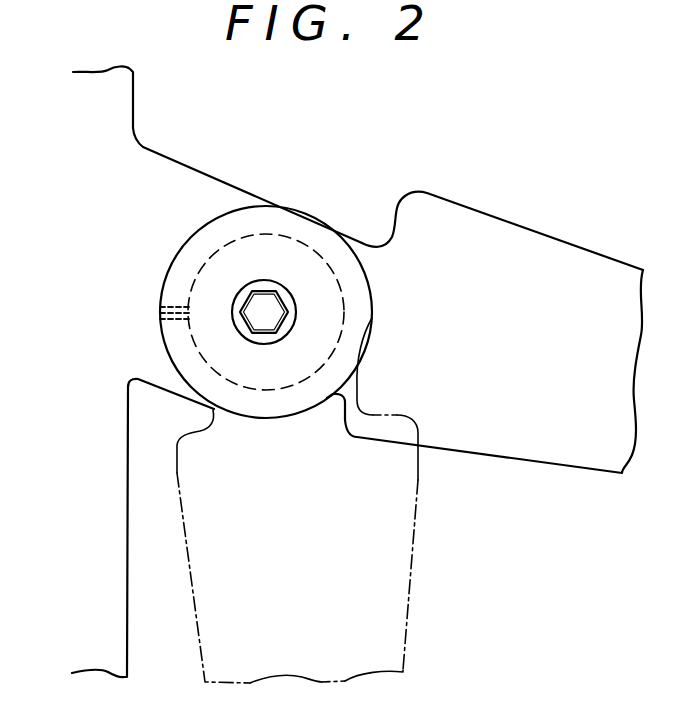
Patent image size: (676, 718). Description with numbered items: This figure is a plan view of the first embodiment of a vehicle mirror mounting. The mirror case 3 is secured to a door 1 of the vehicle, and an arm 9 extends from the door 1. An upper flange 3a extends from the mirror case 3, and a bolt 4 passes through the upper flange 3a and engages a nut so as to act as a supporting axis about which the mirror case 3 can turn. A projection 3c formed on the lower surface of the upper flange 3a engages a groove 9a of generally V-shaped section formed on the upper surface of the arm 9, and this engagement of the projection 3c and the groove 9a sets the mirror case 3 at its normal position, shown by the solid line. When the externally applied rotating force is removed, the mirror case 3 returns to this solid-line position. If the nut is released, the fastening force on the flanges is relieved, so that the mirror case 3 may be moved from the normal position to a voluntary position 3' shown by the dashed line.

The door 1 is at (119, 602).
The mirror case 3 is at (485, 359).
The voluntary position 3' is at (322, 500).
The upper flange 3a is at (268, 215).
The projection 3c is at (155, 330).
The bolt 4 is at (272, 307).
The arm 9 is at (190, 176).
The groove 9a is at (155, 330).